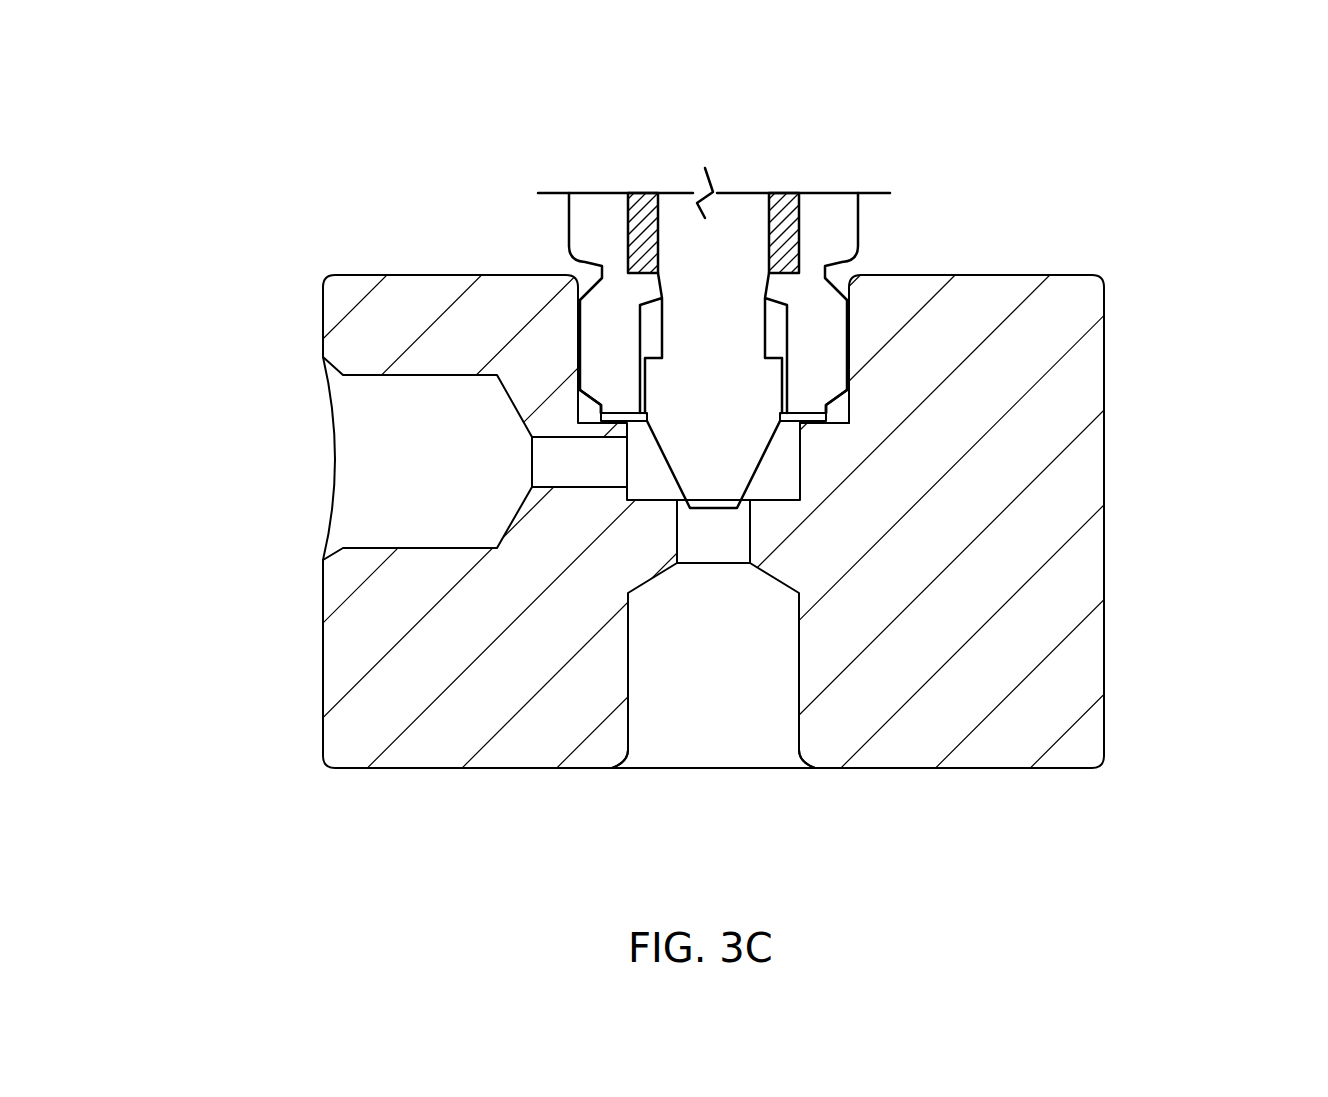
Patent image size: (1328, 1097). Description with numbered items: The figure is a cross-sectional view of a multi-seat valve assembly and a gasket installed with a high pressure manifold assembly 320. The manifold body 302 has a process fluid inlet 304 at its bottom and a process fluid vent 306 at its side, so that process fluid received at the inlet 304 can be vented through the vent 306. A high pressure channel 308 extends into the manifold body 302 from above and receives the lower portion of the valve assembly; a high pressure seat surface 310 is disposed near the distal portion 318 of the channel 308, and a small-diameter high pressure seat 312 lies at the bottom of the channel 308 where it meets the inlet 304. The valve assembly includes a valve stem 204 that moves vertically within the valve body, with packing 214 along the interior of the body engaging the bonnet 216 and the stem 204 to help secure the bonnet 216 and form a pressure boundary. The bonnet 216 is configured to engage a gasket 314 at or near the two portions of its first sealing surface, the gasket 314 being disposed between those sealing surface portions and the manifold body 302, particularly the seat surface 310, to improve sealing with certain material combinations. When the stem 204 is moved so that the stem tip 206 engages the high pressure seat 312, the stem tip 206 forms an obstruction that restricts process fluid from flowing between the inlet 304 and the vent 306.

The high pressure manifold assembly 320 is at (1203, 112).
The valve stem 204 is at (740, 203).
The packing 214 is at (783, 210).
The bonnet 216 is at (847, 222).
The high pressure channel 308 is at (590, 405).
The distal portion 318 is at (837, 408).
The gasket 314 is at (820, 420).
The manifold body 302 is at (1108, 492).
The high pressure seat surface 310 is at (620, 428).
The process fluid vent 306 is at (367, 518).
The stem tip 206 is at (738, 460).
The high pressure seat 312 is at (752, 508).
The process fluid inlet 304 is at (768, 735).